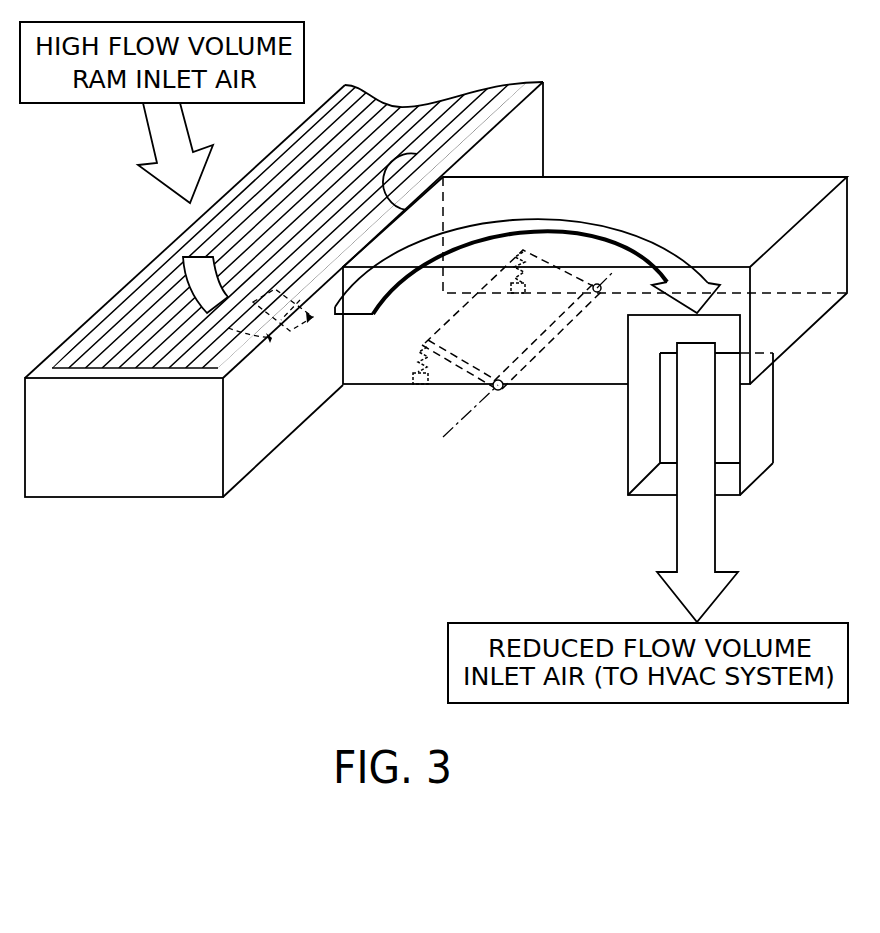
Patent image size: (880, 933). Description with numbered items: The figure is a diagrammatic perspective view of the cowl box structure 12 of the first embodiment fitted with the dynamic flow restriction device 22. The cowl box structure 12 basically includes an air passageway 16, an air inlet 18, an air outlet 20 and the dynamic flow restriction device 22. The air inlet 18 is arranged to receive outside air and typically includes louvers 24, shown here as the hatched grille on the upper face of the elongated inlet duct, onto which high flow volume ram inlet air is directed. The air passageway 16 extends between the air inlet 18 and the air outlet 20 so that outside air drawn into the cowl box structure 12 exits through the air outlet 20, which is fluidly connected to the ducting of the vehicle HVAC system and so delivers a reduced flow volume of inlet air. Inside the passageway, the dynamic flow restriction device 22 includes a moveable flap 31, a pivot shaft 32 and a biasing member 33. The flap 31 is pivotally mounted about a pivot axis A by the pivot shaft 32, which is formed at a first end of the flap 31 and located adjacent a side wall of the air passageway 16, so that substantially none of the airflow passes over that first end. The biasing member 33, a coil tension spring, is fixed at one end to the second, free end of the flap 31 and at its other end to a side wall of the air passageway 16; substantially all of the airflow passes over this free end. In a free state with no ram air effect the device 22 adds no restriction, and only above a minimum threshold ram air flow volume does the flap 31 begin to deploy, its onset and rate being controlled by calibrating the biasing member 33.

The cowl box structure 12 is at (740, 65).
The air passageway 16 is at (284, 303).
The air inlet 18 is at (417, 154).
The air outlet 20 is at (630, 343).
The dynamic flow restriction device 22 is at (457, 364).
The louvers 24 is at (145, 315).
The moveable flap 31 is at (543, 260).
The pivot shaft 32 is at (528, 362).
The biasing member 33 is at (415, 361).
The pivot axis A is at (453, 428).